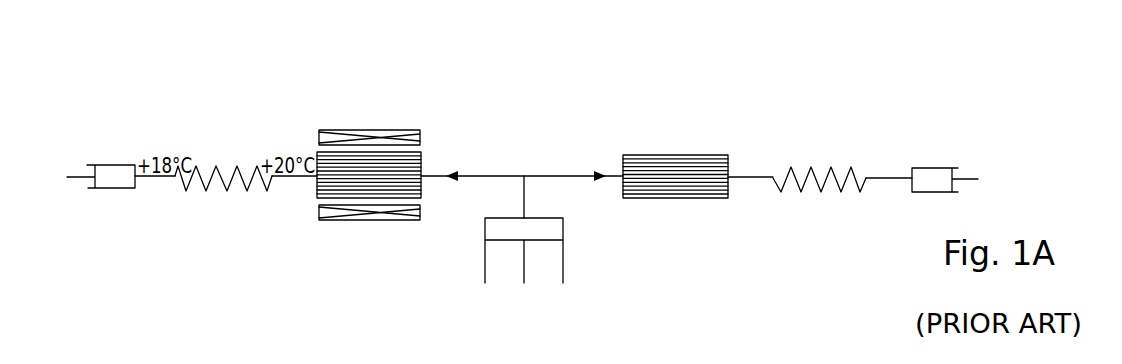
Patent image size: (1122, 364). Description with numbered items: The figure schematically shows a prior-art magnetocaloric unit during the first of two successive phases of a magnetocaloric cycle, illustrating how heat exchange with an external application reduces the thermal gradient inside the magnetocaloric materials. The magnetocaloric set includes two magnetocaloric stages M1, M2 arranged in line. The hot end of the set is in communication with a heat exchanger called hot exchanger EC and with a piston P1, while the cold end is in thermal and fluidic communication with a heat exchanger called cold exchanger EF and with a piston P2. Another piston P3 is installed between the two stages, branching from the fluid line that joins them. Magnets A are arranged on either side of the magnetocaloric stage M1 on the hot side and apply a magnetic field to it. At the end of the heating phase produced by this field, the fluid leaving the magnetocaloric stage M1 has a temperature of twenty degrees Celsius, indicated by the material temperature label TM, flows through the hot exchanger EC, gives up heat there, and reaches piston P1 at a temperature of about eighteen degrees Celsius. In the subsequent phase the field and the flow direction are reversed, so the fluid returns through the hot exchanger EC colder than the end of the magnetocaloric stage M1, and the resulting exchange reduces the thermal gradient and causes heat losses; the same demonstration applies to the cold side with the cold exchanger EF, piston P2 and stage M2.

The piston P1 is at (110, 149).
The hot exchanger EC is at (223, 158).
The magnetocaloric stage M1 is at (373, 176).
The magnets A is at (413, 213).
The magnetocaloric material temperature TM is at (318, 206).
The piston P3 is at (576, 257).
The magnetocaloric stage M2 is at (652, 160).
The cold exchanger EF is at (819, 160).
The piston P2 is at (942, 151).